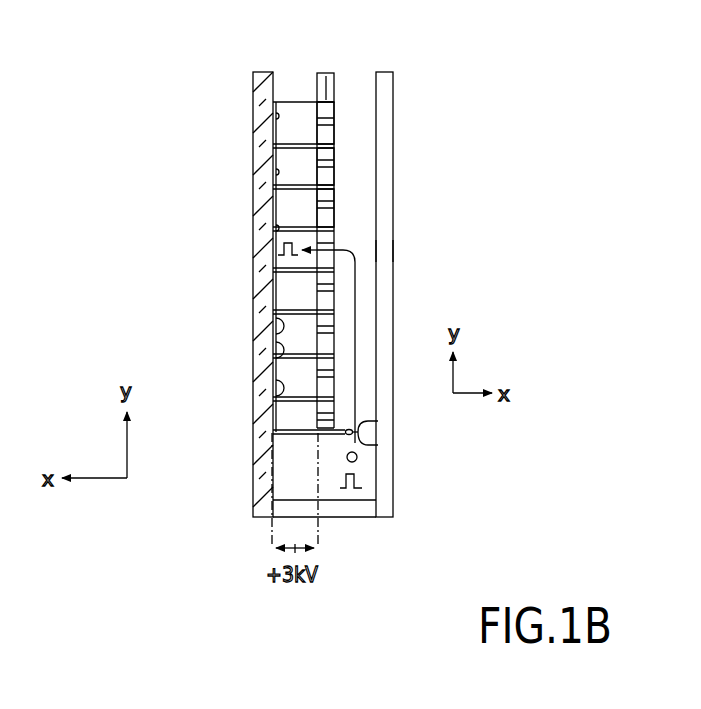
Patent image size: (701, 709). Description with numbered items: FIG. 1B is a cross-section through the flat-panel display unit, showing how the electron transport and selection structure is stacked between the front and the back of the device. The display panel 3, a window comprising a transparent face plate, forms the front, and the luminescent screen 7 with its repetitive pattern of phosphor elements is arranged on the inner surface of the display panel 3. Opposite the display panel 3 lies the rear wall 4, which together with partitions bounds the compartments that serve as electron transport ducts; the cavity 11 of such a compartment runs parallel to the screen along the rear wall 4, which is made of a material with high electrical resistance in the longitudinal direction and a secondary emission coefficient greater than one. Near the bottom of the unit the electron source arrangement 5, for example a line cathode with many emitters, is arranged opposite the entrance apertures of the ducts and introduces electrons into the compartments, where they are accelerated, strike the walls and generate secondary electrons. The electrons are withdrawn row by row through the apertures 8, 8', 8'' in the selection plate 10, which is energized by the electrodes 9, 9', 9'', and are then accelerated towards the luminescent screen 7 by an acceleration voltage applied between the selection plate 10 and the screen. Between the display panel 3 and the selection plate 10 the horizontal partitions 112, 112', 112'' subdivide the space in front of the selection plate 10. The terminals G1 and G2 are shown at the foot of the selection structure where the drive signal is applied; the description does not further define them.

The display panel 3 is at (266, 88).
The luminescent screen 7 is at (274, 248).
The electrode 9 is at (279, 133).
The electrode 9' is at (279, 175).
The electrode 9'' is at (279, 216).
The selection plate 10 is at (326, 73).
The aperture 8 is at (378, 123).
The aperture 8' is at (379, 166).
The aperture 8'' is at (381, 208).
The cavity 11 is at (370, 251).
The rear wall 4 is at (388, 298).
The horizontal partition 112 is at (245, 326).
The horizontal partition 112' is at (245, 350).
The horizontal partition 112'' is at (245, 382).
The gate terminal G2 is at (378, 421).
The gate terminal G1 is at (378, 445).
The electron source arrangement 5 is at (357, 459).